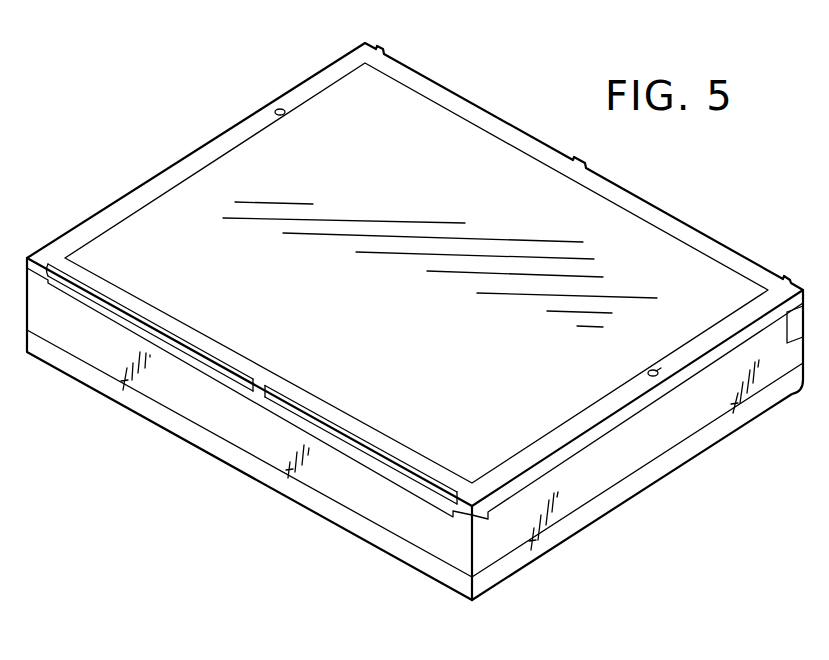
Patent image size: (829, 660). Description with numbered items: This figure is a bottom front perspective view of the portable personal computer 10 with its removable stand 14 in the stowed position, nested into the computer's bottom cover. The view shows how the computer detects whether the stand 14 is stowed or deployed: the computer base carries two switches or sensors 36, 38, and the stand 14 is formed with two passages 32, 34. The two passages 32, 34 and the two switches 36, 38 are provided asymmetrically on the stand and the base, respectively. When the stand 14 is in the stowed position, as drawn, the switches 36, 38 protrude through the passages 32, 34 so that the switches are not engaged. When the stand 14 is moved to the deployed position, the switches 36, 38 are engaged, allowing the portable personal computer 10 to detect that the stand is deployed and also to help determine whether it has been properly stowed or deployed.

The portable personal computer 10 is at (157, 482).
The removable stand 14 is at (123, 190).
The passage 32 is at (263, 112).
The passage 34 is at (648, 376).
The switch 36 is at (278, 109).
The switch 38 is at (661, 368).